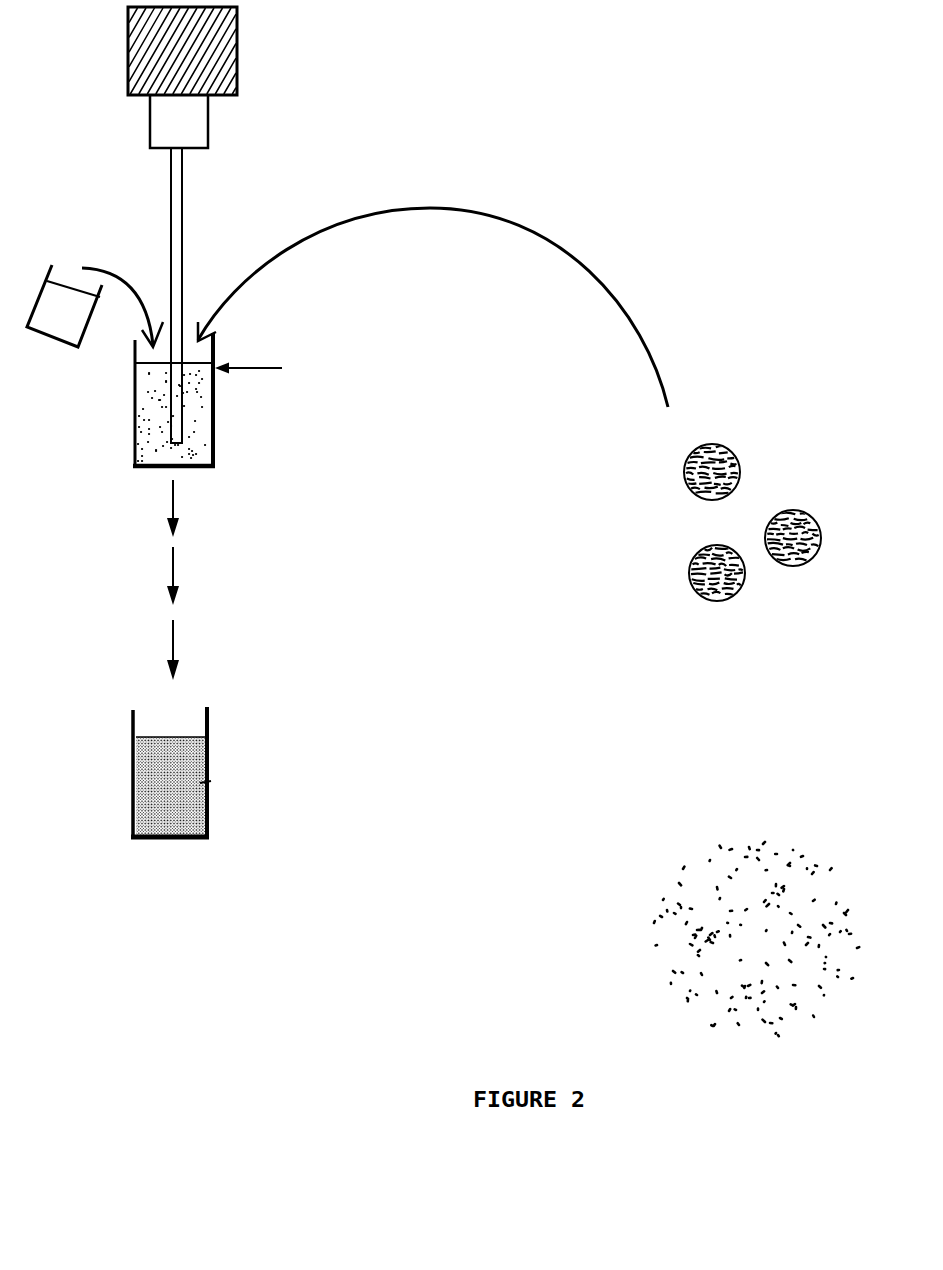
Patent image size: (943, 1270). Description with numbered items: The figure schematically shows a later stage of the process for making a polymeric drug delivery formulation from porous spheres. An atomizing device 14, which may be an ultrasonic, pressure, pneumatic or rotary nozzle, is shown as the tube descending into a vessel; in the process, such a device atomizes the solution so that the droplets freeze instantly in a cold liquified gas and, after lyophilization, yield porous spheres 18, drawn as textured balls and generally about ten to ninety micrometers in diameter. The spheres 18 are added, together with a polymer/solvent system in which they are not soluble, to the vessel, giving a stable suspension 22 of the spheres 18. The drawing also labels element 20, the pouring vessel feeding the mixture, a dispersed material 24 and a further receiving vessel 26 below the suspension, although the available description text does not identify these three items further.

The atomizing device 14 is at (183, 192).
The porous spheres 18 is at (509, 423).
The liquid container (pouring vessel) 20 is at (95, 306).
The stable suspension 22 is at (120, 420).
The dispersed particles 24 is at (756, 964).
The collection beaker with product 26 is at (119, 807).